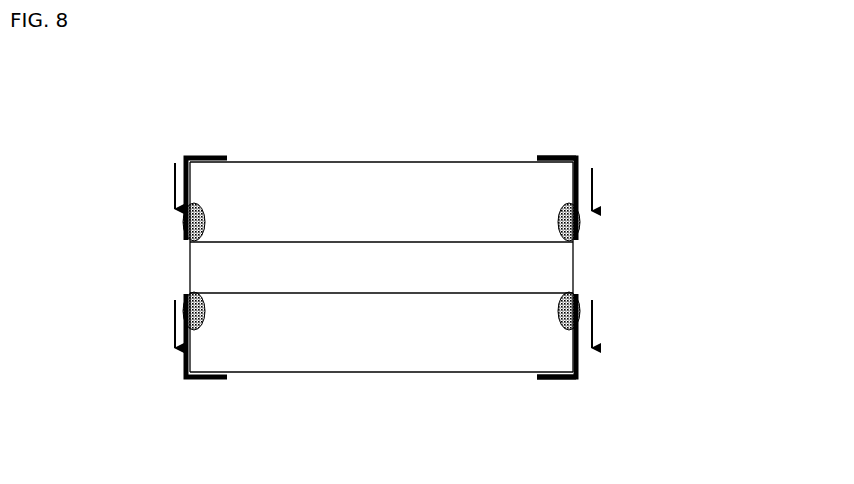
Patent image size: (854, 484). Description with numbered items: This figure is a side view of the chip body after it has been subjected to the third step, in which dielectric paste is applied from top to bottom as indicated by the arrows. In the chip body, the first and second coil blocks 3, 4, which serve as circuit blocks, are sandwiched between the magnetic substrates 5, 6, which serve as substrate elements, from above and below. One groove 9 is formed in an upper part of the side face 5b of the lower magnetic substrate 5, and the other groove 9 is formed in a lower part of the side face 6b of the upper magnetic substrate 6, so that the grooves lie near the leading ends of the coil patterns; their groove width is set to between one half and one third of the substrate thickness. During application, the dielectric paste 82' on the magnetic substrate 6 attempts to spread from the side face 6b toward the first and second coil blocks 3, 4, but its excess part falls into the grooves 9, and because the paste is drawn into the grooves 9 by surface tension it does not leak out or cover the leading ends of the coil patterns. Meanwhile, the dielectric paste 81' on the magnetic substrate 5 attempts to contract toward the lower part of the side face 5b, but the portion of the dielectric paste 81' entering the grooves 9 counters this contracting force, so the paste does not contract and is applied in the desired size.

The first coil block 3 is at (454, 260).
The second coil block 4 is at (670, 262).
The magnetic substrate 5 is at (428, 356).
The side face of the magnetic substrate 5b is at (573, 372).
The magnetic substrate 6 is at (374, 177).
The side face of the magnetic substrate 6b is at (575, 181).
The groove 9 is at (205, 220).
The dielectric paste 81' is at (364, 326).
The dielectric paste 82' is at (365, 210).